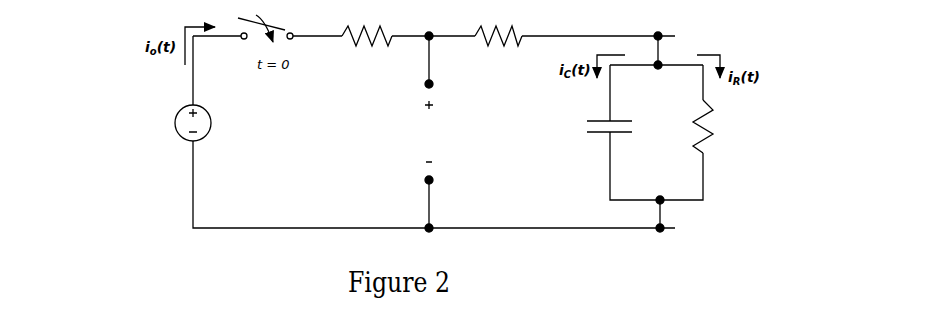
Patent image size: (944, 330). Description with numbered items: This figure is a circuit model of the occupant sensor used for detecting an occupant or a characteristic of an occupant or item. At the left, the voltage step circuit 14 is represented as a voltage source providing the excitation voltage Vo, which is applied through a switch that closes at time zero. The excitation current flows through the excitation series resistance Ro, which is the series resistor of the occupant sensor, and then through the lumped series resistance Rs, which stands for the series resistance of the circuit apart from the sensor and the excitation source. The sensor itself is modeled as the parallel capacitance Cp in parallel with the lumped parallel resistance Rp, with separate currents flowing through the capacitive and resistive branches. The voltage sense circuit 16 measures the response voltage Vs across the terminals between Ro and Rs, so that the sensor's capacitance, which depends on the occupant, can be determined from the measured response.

The voltage step circuit 14 is at (128, 127).
The voltage sense circuit 16 is at (400, 144).
The series resistor Ro is at (367, 48).
The lumped series resistance Rs is at (498, 47).
The parallel capacitance Cp is at (621, 131).
The lumped parallel resistance Rp is at (713, 126).